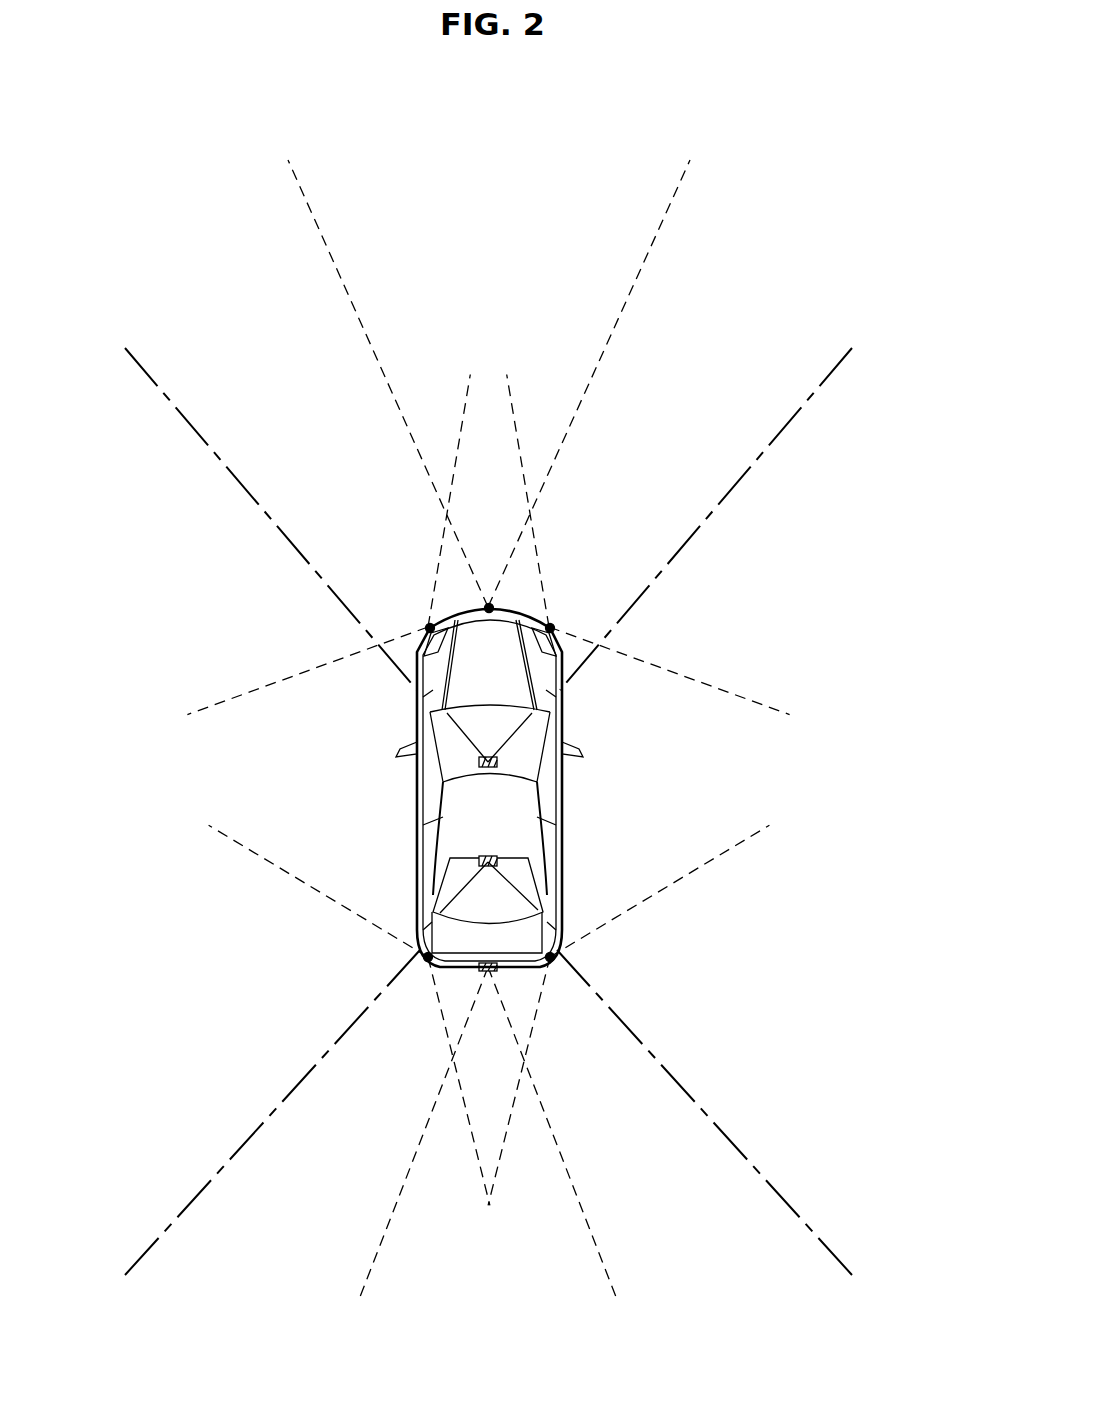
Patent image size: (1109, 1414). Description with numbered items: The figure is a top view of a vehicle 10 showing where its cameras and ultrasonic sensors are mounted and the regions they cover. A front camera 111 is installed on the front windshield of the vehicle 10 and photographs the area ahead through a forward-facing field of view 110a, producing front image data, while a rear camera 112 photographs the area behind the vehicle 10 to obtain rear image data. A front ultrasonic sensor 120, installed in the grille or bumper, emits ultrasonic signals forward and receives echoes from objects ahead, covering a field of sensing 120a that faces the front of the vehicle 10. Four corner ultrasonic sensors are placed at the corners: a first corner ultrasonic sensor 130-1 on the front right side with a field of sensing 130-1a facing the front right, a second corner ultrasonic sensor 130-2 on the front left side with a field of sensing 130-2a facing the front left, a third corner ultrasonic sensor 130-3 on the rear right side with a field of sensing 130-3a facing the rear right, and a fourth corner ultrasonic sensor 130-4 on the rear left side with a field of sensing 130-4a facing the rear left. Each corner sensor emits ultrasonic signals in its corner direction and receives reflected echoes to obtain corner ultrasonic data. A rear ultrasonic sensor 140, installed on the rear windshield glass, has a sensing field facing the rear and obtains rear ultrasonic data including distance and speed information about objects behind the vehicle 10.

The vehicle 10 is at (538, 817).
The field of view 110a is at (810, 397).
The front camera 111 is at (497, 762).
The rear camera 112 is at (497, 862).
The front ultrasonic sensor 120 is at (490, 606).
The field of sensing 120a is at (640, 237).
The first corner ultrasonic sensor 130-1 is at (552, 622).
The second corner ultrasonic sensor 130-2 is at (431, 624).
The third corner ultrasonic sensor 130-3 is at (551, 962).
The fourth corner ultrasonic sensor 130-4 is at (428, 962).
The field of sensing 130-1a is at (687, 423).
The field of sensing 130-2a is at (295, 423).
The field of sensing 130-3a is at (755, 1094).
The field of sensing 130-4a is at (216, 1094).
The rear ultrasonic sensor 140 is at (489, 972).